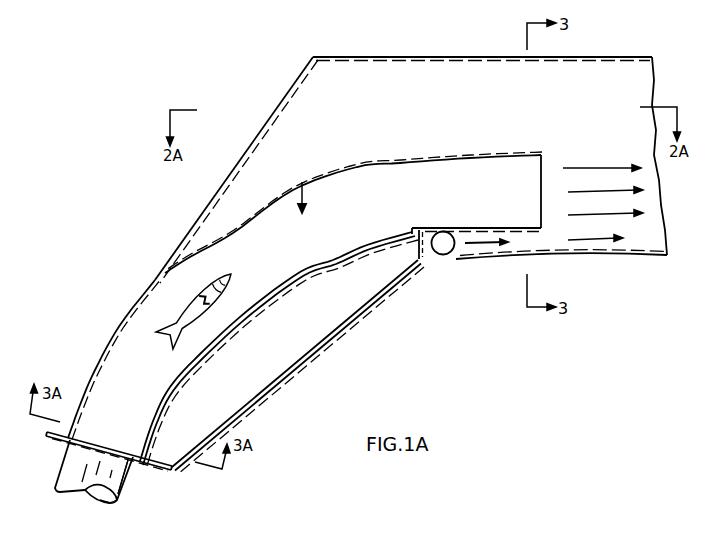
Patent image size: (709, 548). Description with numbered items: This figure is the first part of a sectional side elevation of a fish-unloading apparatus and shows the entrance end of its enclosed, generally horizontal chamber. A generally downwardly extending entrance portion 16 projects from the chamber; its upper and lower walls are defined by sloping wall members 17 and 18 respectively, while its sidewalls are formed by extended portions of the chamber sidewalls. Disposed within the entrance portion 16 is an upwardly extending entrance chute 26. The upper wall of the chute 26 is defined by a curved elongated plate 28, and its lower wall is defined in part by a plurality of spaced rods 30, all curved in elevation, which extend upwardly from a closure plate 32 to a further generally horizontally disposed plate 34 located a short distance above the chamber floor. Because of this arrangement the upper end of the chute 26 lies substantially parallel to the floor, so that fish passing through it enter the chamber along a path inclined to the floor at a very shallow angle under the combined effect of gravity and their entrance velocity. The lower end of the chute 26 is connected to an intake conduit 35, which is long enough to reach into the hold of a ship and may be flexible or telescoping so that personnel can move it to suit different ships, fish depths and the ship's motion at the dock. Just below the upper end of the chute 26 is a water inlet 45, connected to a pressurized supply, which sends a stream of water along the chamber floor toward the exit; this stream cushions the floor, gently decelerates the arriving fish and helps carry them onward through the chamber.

The sloping wall member 17 is at (257, 137).
The entrance chute 26 is at (302, 189).
The curved elongated plate 28 is at (472, 157).
The generally horizontally disposed plate 34 is at (460, 230).
The water inlet 45 is at (443, 254).
The spaced rods 30 is at (252, 301).
The sloping wall member 18 is at (296, 365).
The entrance portion 16 is at (333, 352).
The closure plate 32 is at (145, 465).
The intake conduit 35 is at (127, 487).